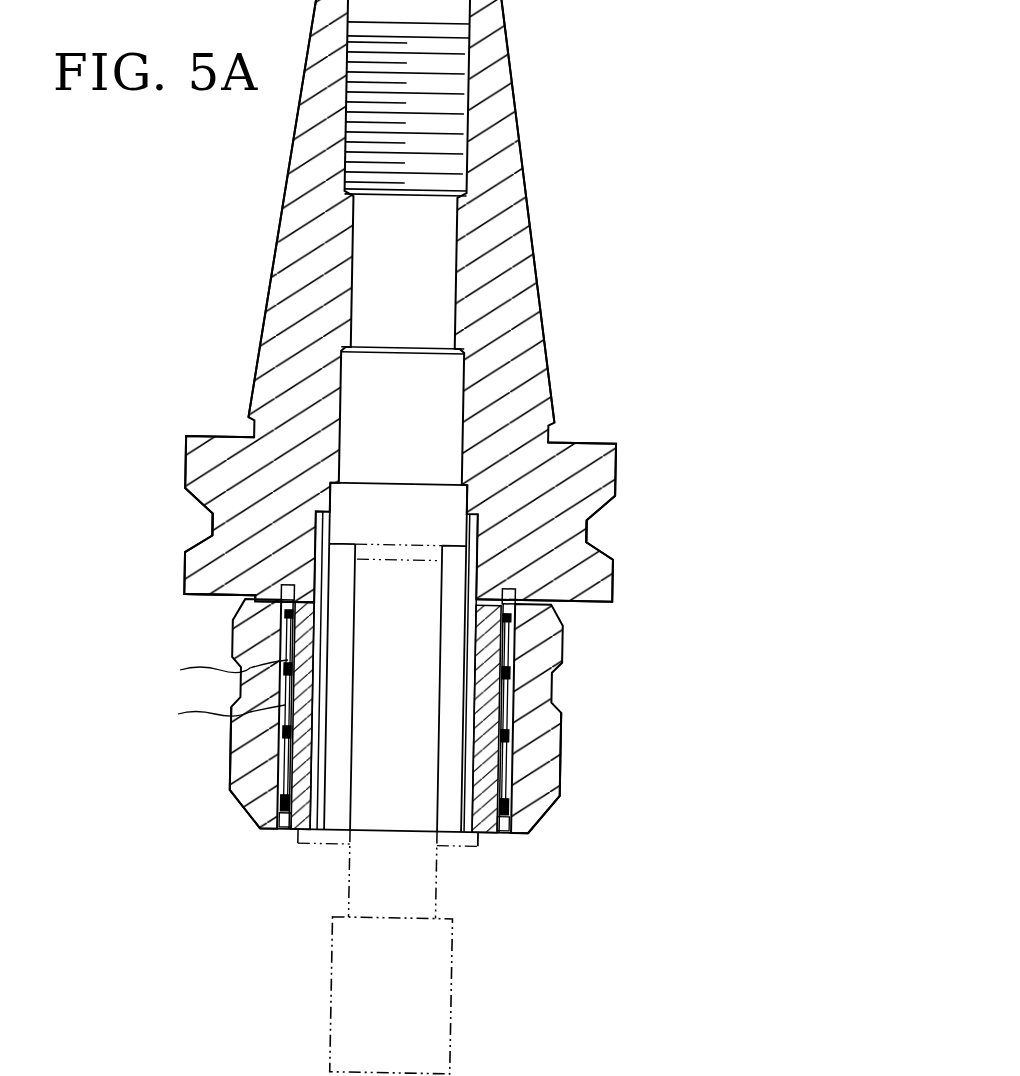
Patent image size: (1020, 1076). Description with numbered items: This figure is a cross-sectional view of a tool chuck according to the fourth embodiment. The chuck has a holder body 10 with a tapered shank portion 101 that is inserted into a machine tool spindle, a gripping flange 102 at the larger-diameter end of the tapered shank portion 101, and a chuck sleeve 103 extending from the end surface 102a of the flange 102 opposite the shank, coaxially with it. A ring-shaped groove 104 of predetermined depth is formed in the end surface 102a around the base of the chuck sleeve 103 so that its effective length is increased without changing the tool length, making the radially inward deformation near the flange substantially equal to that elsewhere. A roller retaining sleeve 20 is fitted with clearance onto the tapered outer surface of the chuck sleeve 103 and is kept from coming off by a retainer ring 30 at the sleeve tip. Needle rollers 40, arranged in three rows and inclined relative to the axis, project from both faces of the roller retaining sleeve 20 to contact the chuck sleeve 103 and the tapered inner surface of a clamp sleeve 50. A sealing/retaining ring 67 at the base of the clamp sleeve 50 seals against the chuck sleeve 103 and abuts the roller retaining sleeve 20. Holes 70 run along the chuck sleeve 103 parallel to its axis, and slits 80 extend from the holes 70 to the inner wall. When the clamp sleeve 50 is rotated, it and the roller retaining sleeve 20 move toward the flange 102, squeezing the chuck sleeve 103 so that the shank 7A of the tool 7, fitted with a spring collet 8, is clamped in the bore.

The holder body 10 is at (530, 179).
The tapered shank portion 101 is at (517, 305).
The gripping flange 102 is at (597, 442).
The end surface 102a is at (197, 599).
The chuck sleeve 103 is at (330, 625).
The groove 104 is at (586, 537).
The roller retaining sleeve 20 is at (545, 706).
The retainer ring 30 is at (493, 845).
The needle rollers 40 is at (553, 665).
The clamp sleeve 50 is at (543, 755).
The sealing/retaining ring 67 is at (538, 633).
The holes 70 is at (318, 725).
The slits 80 is at (327, 673).
The tool 7 is at (372, 982).
The shank 7A is at (350, 898).
The spring collet 8 is at (315, 846).